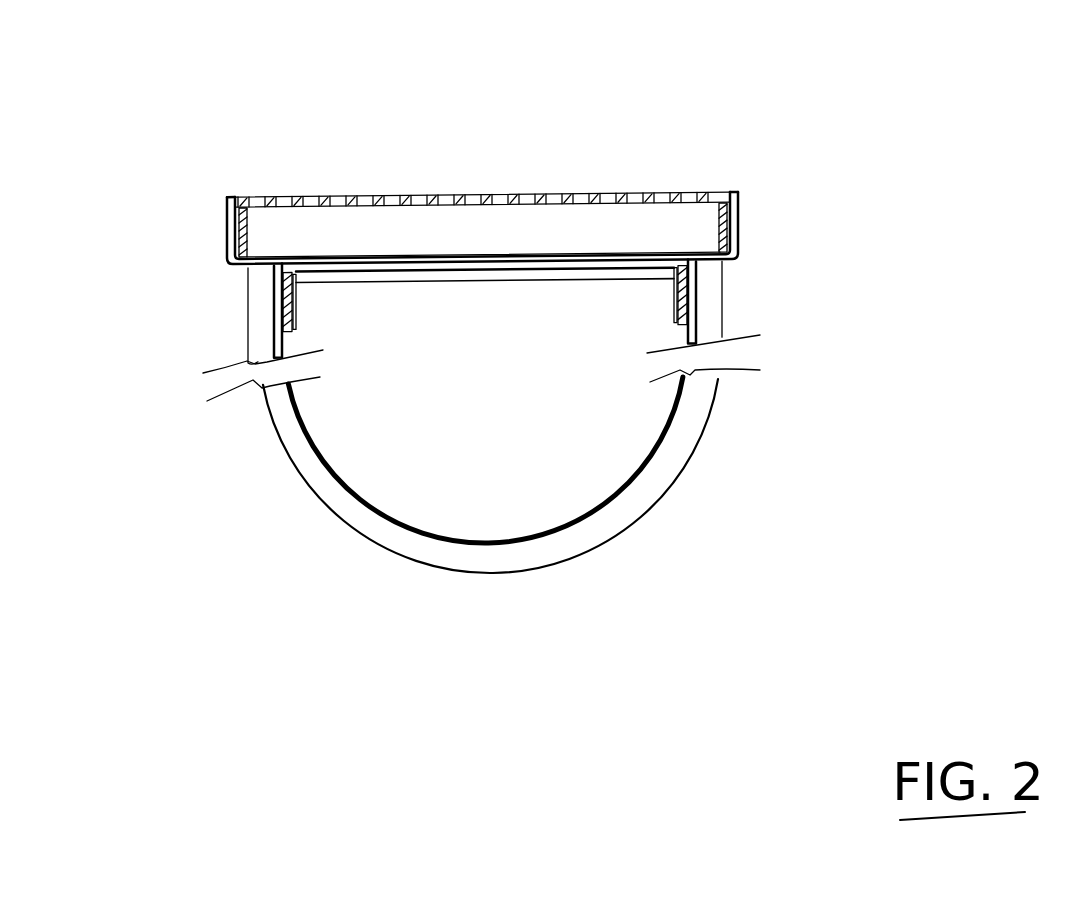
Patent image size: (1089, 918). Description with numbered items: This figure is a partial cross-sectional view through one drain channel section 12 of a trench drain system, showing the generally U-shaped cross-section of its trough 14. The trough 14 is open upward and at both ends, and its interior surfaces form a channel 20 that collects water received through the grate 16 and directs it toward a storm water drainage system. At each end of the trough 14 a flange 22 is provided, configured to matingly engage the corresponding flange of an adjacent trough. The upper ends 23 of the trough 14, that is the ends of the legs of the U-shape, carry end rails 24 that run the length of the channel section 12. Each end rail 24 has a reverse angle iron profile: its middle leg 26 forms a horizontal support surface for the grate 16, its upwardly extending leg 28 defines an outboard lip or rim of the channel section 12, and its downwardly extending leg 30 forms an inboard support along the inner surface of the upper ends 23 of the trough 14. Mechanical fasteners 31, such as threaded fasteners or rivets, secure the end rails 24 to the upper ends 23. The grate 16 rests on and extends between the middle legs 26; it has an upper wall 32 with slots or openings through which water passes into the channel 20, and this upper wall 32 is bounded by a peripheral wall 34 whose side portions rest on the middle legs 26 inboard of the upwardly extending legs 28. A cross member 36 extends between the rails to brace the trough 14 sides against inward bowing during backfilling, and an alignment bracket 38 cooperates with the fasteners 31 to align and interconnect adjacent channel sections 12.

The drain channel section 12 is at (889, 152).
The trough 14 is at (305, 496).
The grate 16 is at (389, 182).
The channel 20 is at (512, 399).
The flange 22 is at (667, 452).
The upper end of the trough 23 is at (283, 290).
The end rail 24 is at (214, 227).
The middle leg 26 is at (265, 274).
The upwardly extending leg 28 is at (225, 205).
The downwardly extending leg 30 is at (293, 312).
The mechanical fastener 31 is at (300, 274).
The upper wall 32 is at (535, 195).
The peripheral wall 34 is at (247, 233).
The cross member 36 is at (453, 277).
The alignment bracket 38 is at (300, 286).